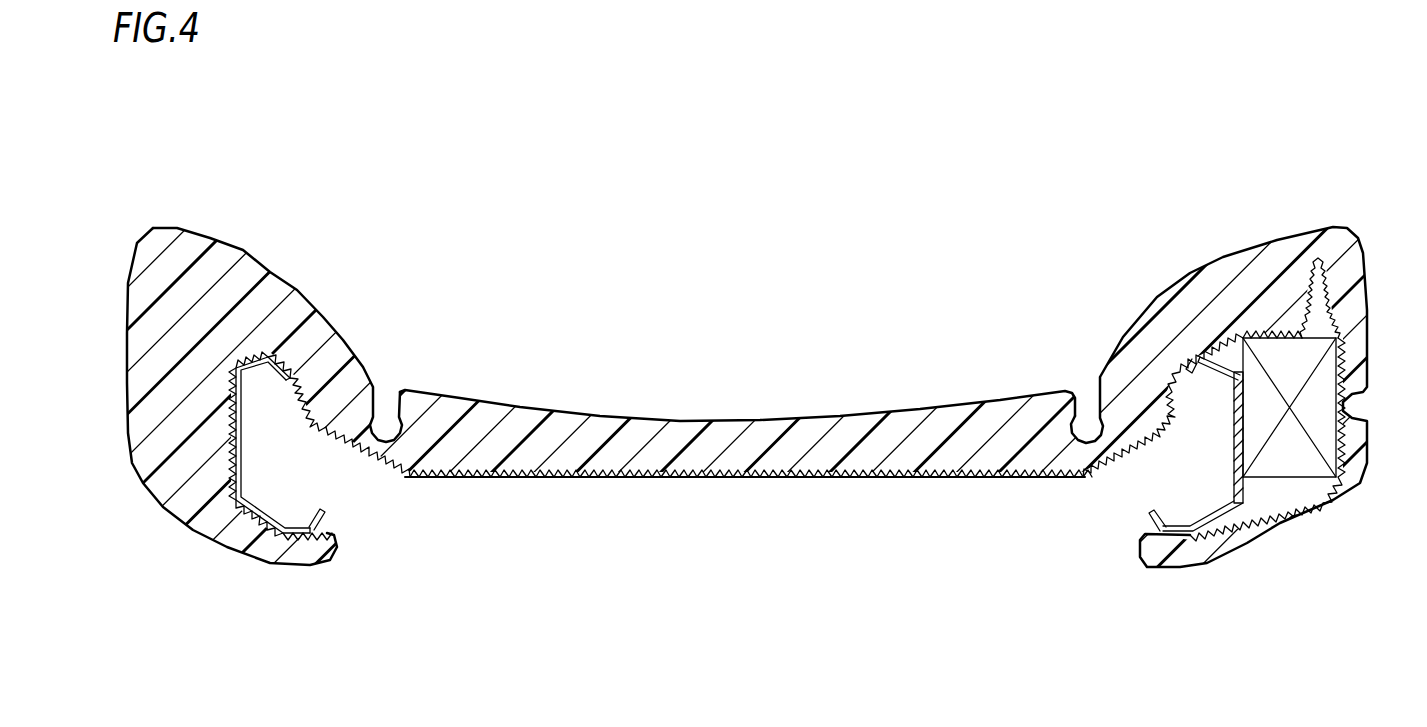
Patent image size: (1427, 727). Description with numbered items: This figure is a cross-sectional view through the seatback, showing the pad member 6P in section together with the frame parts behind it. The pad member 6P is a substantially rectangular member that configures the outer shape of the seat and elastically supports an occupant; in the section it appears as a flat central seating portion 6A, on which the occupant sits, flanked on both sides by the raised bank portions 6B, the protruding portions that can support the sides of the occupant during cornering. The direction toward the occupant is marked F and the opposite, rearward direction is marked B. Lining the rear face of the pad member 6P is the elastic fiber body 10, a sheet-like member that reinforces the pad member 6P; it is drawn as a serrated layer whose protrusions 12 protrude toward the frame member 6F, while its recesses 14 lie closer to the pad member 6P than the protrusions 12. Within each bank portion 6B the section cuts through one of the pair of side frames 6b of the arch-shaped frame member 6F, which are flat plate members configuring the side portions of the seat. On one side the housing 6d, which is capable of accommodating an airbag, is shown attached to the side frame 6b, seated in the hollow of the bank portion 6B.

The bank portion 6B is at (293, 276).
The seating portion 6A is at (813, 412).
The pad member 6P is at (930, 427).
The side frame 6b is at (243, 477).
The frame member 6F is at (787, 399).
The housing 6d is at (1313, 409).
The elastic fiber body 10 is at (748, 513).
The protrusion 12 is at (745, 516).
The recess 14 is at (666, 480).
The front side F is at (738, 317).
The back side B is at (738, 593).